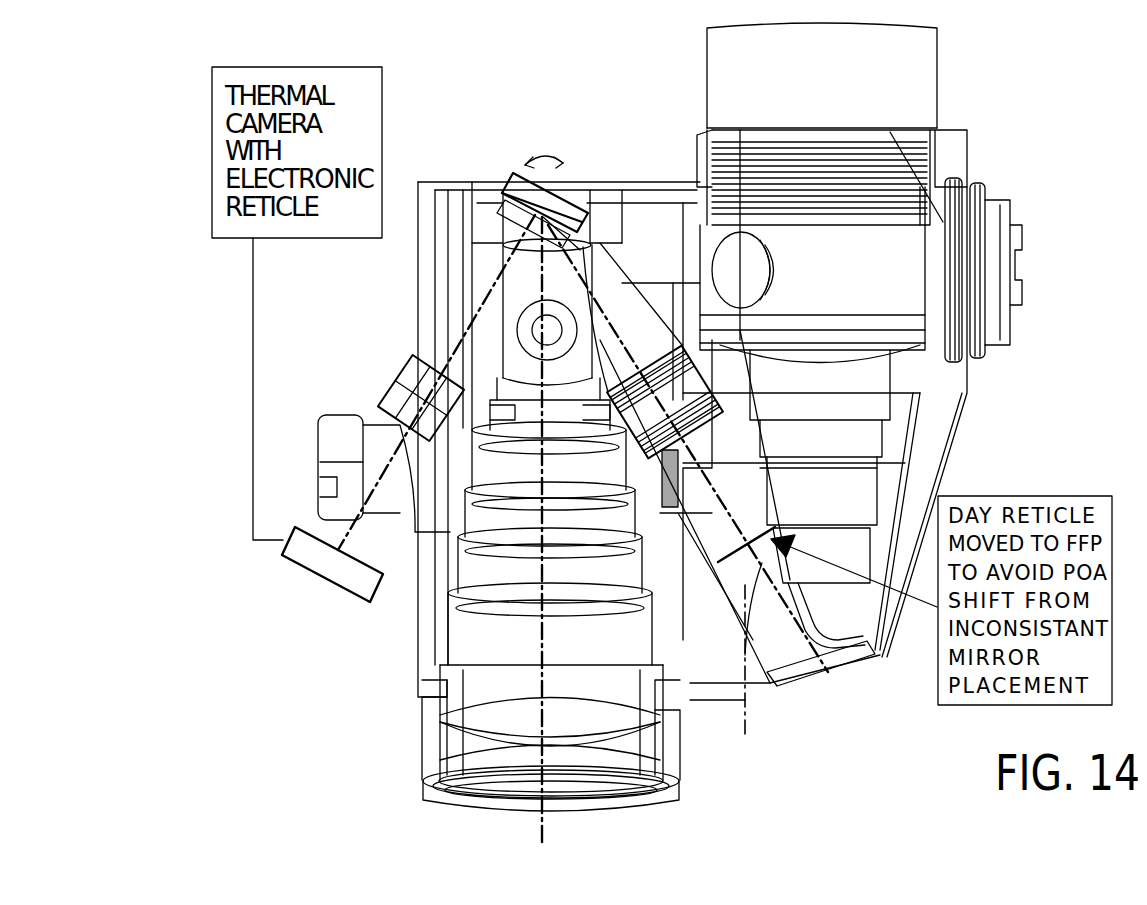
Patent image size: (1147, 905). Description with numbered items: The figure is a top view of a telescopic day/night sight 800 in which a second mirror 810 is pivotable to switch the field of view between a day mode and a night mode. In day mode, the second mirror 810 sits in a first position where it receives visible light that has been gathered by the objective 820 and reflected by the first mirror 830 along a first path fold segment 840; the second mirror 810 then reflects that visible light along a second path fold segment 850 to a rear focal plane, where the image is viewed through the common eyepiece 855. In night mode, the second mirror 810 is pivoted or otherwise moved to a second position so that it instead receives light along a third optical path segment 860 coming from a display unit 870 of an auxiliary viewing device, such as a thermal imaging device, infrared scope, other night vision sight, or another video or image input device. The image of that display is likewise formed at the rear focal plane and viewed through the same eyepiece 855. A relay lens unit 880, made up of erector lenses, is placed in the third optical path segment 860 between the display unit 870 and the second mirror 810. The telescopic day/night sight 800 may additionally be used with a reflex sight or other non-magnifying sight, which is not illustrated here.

The telescopic day/night sight 800 is at (1043, 157).
The second mirror 810 is at (578, 197).
The objective 820 is at (923, 60).
The first mirror 830 is at (830, 668).
The first path fold segment 840 is at (744, 667).
The second path fold segment 850 is at (540, 618).
The common eyepiece 855 is at (628, 790).
The third optical path segment 860 is at (463, 347).
The display unit 870 is at (320, 563).
The relay lens unit 880 is at (406, 380).